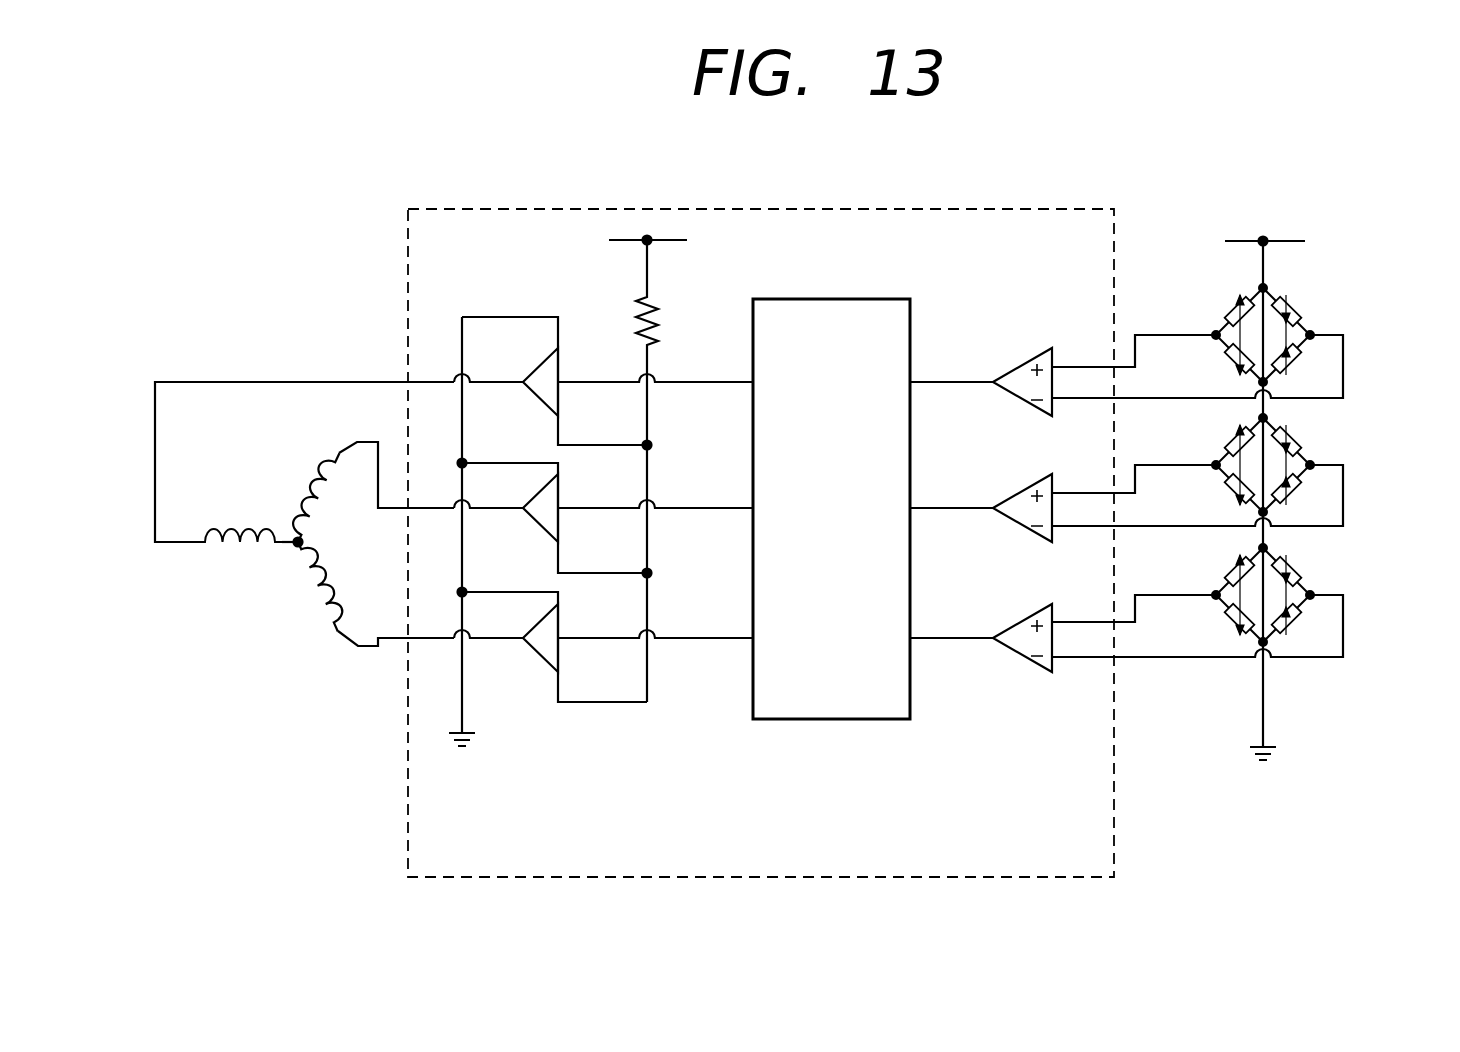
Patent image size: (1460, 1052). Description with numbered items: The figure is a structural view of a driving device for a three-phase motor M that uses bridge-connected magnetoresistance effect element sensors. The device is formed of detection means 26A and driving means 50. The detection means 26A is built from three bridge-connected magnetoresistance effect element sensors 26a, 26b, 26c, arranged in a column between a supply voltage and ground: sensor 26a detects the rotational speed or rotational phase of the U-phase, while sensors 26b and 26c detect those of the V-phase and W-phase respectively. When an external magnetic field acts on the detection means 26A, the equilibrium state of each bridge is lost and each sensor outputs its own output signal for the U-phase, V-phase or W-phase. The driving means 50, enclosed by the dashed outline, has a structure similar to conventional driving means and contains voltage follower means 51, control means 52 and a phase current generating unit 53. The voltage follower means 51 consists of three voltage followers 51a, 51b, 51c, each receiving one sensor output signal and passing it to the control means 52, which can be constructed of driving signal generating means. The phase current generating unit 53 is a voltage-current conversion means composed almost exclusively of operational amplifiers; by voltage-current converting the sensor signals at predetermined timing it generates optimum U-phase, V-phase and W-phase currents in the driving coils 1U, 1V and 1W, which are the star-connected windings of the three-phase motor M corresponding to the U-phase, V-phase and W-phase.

The driving means 50 is at (1020, 209).
The voltage follower means 51 is at (1005, 586).
The voltage follower 51a is at (1024, 364).
The voltage follower 51b is at (1024, 490).
The voltage follower 51c is at (1024, 620).
The control means 52 is at (805, 721).
The phase current generating unit 53 is at (648, 795).
The detection means 26A is at (1255, 538).
The magnetoresistance effect element sensor 26a is at (1332, 313).
The magnetoresistance effect element sensor 26b is at (1332, 442).
The magnetoresistance effect element sensor 26c is at (1332, 570).
The driving coil 1U is at (228, 552).
The driving coil 1V is at (313, 486).
The driving coil 1W is at (315, 598).
The three-phase motor M is at (304, 616).